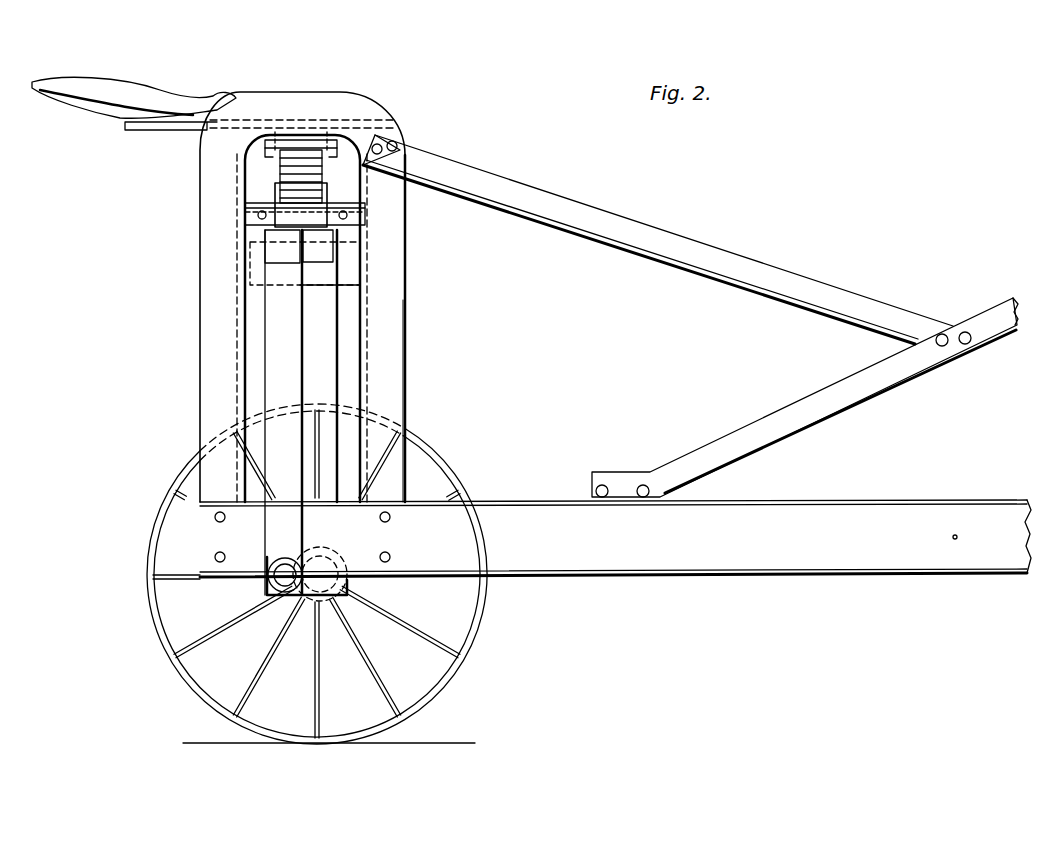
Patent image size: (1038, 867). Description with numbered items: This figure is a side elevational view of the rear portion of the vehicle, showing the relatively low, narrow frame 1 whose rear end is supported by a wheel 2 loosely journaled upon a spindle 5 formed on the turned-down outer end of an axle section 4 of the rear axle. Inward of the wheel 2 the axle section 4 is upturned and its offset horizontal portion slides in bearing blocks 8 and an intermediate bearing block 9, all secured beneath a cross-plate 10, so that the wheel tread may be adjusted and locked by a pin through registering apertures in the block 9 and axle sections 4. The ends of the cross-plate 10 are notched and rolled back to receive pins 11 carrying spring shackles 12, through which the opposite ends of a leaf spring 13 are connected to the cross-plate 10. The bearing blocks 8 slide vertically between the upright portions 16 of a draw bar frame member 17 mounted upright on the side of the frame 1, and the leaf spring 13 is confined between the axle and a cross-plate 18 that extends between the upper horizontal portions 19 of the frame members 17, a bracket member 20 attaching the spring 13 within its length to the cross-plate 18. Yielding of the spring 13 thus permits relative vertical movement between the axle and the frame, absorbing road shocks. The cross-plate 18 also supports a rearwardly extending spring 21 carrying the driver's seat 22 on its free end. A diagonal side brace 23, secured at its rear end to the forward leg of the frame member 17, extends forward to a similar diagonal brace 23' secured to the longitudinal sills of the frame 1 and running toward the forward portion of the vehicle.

The frame 1 is at (752, 545).
The wheel 2 is at (472, 650).
The axle section 4 is at (268, 339).
The spindle 5 is at (182, 648).
The bearing block 8 is at (352, 283).
The intermediate bearing block 9 is at (250, 260).
The cross-plate 10 is at (245, 223).
The pin 11 is at (245, 208).
The spring shackle 12 is at (322, 188).
The leaf spring 13 is at (393, 151).
The upright portion 16 is at (208, 397).
The draw bar frame member 17 is at (406, 386).
The cross-plate 18 is at (310, 143).
The upper horizontal portion 19 is at (318, 100).
The bracket member 20 is at (278, 152).
The spring 21 is at (152, 126).
The driver's seat 22 is at (107, 88).
The side brace 23 is at (658, 239).
The diagonal brace 23' is at (805, 397).